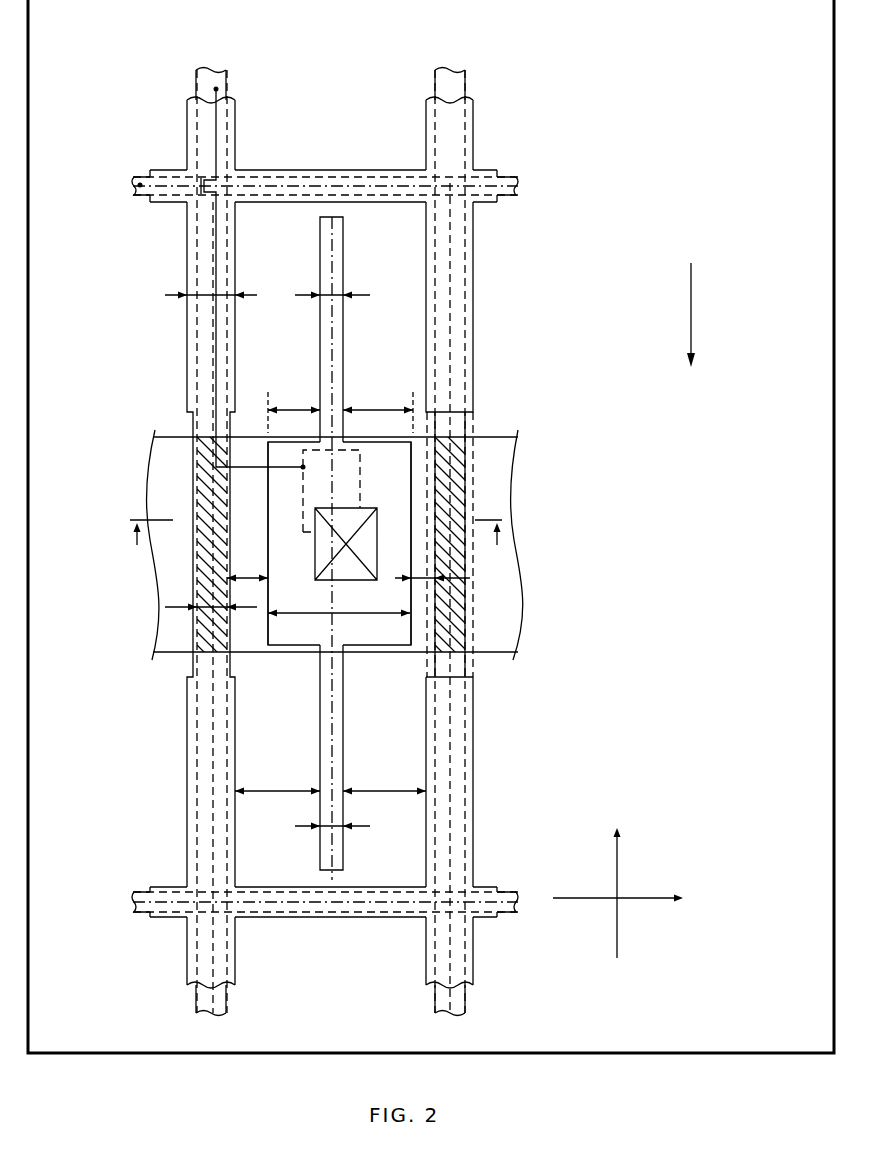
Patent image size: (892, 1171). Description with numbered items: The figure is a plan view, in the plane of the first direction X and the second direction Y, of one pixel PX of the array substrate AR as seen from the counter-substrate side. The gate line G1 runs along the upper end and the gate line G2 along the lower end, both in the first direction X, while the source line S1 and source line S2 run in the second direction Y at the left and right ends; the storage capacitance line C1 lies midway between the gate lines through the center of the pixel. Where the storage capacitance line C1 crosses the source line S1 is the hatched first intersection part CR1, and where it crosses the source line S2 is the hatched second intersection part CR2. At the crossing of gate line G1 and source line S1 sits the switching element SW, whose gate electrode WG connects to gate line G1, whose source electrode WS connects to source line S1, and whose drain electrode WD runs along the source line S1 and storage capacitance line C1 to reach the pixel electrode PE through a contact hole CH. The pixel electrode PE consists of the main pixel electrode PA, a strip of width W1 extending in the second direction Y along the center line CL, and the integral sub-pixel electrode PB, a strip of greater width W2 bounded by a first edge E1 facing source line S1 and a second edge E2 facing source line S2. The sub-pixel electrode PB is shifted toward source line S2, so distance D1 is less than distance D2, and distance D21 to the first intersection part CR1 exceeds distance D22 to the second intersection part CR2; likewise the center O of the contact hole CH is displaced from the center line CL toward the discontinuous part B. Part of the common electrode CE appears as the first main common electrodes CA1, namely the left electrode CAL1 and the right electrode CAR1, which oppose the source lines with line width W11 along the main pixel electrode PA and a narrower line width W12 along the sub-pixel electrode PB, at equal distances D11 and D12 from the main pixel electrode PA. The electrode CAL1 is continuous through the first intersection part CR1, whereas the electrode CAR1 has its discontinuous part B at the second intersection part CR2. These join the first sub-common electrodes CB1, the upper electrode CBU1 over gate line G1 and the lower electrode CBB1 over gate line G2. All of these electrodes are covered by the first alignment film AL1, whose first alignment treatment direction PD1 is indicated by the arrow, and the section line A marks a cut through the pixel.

The source line S1 is at (207, 80).
The source line S2 is at (445, 80).
The gate line G1 is at (132, 190).
The gate line G2 is at (132, 898).
The source electrode WS is at (214, 89).
The gate electrode WG is at (140, 183).
The switching element SW is at (204, 201).
The first sub-common electrode CBU1 is at (323, 159).
The first sub-common electrode CBB1 is at (338, 920).
The first sub-common electrode CB1 is at (333, 170).
The first main common electrode CAL1 is at (137, 492).
The first main common electrode CAR1 is at (473, 366).
The first main common electrode CA1 is at (187, 806).
The common electrode CE is at (252, 978).
The pixel PX is at (459, 178).
The array substrate AR is at (589, 171).
The pixel electrode PE is at (338, 545).
The main pixel electrode PA is at (335, 339).
The sub-pixel electrode PB is at (305, 640).
The center line CL is at (332, 878).
The width W1 is at (337, 294).
The line width W11 is at (222, 294).
The line width W12 is at (203, 607).
The width W2 is at (339, 602).
The distance D1 is at (294, 407).
The distance D2 is at (378, 407).
The distance D11 is at (277, 779).
The distance D12 is at (384, 779).
The distance D21 is at (250, 565).
The distance D22 is at (425, 579).
The first alignment treatment direction PD1 is at (758, 315).
The first alignment film AL1 is at (692, 305).
The discontinuous part B is at (484, 420).
The first intersection part CR1 is at (184, 458).
The second intersection part CR2 is at (474, 458).
The storage capacitance line C1 is at (150, 496).
The drain electrode WD is at (360, 462).
The contact hole CH is at (377, 522).
The center O is at (346, 544).
The section line A- A is at (317, 548).
The first edge E1 is at (268, 626).
The second edge E2 is at (413, 622).
The first direction X is at (627, 900).
The second direction Y is at (618, 878).